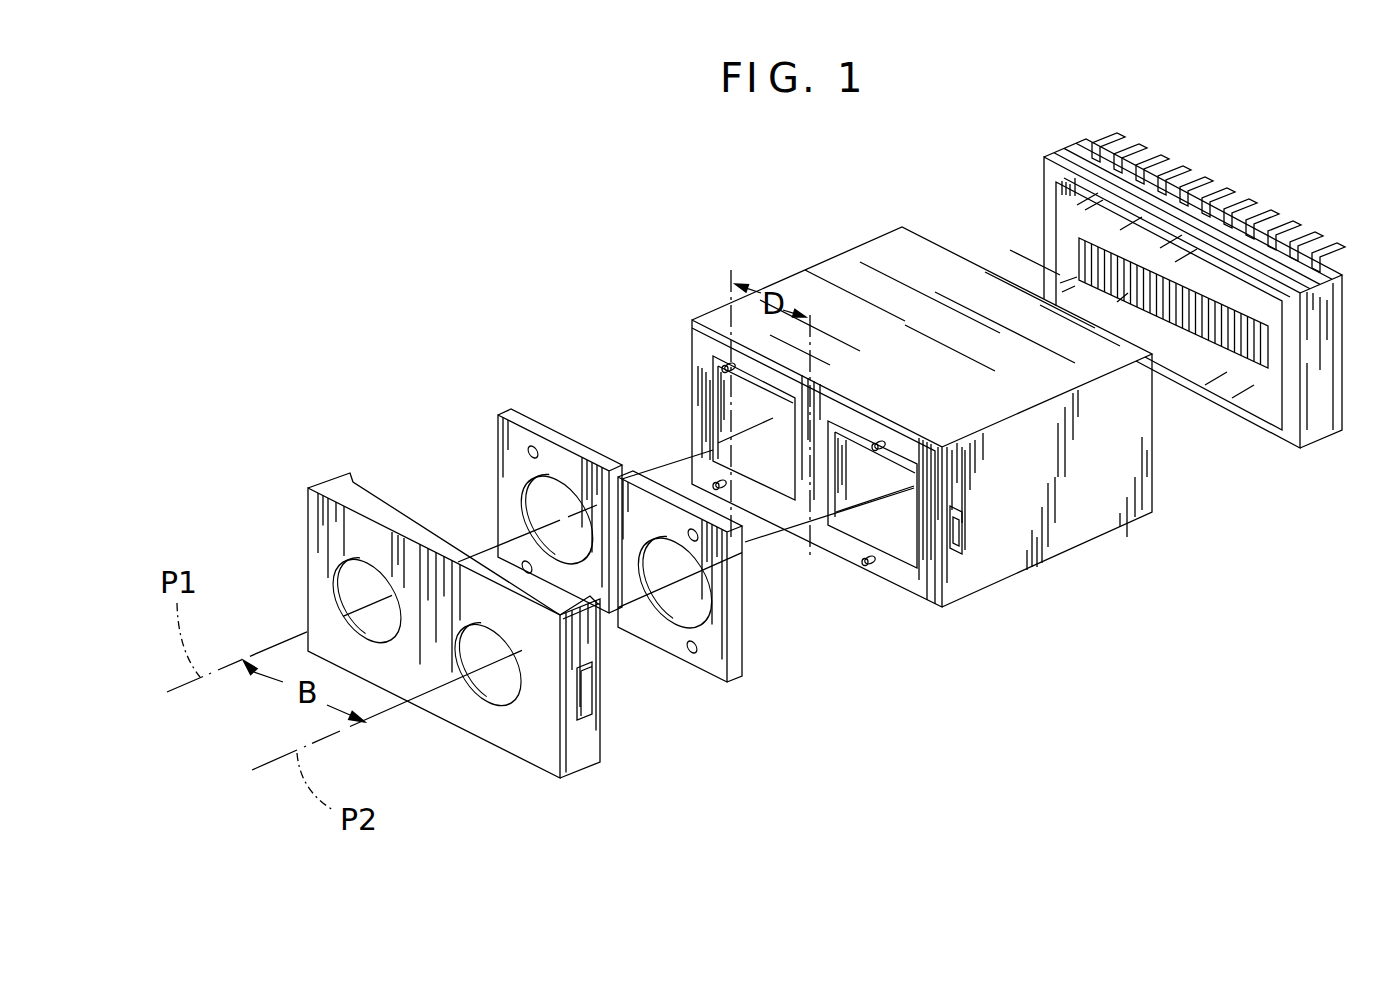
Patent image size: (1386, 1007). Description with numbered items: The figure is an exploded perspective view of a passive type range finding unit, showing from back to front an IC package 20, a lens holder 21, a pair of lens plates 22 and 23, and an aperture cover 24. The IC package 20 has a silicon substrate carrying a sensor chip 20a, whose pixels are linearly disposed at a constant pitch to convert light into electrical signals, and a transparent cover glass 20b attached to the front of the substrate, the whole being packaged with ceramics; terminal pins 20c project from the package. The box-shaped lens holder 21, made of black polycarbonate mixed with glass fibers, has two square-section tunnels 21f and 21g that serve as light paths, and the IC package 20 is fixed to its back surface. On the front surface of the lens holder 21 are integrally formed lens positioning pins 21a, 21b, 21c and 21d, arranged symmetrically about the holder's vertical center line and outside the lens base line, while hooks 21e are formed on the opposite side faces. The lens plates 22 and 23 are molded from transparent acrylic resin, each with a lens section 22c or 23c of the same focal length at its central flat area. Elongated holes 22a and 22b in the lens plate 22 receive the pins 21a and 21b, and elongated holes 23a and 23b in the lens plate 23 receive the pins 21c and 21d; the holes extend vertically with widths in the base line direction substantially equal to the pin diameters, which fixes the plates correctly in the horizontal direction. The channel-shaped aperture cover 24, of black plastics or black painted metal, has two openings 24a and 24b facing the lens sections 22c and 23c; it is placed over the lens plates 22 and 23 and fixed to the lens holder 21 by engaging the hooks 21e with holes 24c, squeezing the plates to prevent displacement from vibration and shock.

The IC package 20 is at (1049, 138).
The sensor chip 20a is at (1250, 368).
The cover glass 20b is at (1270, 414).
The terminal pins 20c is at (1272, 215).
The lens holder 21 is at (1067, 569).
The lens positioning pin 21a is at (725, 364).
The lens positioning pin 21b is at (716, 480).
The lens positioning pin 21c is at (885, 442).
The lens positioning pin 21d is at (871, 566).
The hook 21e is at (956, 548).
The tunnel 21f is at (778, 478).
The tunnel 21g is at (842, 433).
The lens plate 22 is at (488, 434).
The elongated hole 22a is at (533, 444).
The elongated hole 22b is at (522, 561).
The lens section 22c is at (530, 500).
The lens plate 23 is at (762, 657).
The elongated hole 23a is at (692, 528).
The elongated hole 23b is at (697, 657).
The lens section 23c is at (698, 597).
The aperture cover 24 is at (490, 756).
The opening 24a is at (380, 566).
The opening 24b is at (483, 703).
The hole 24c is at (590, 692).